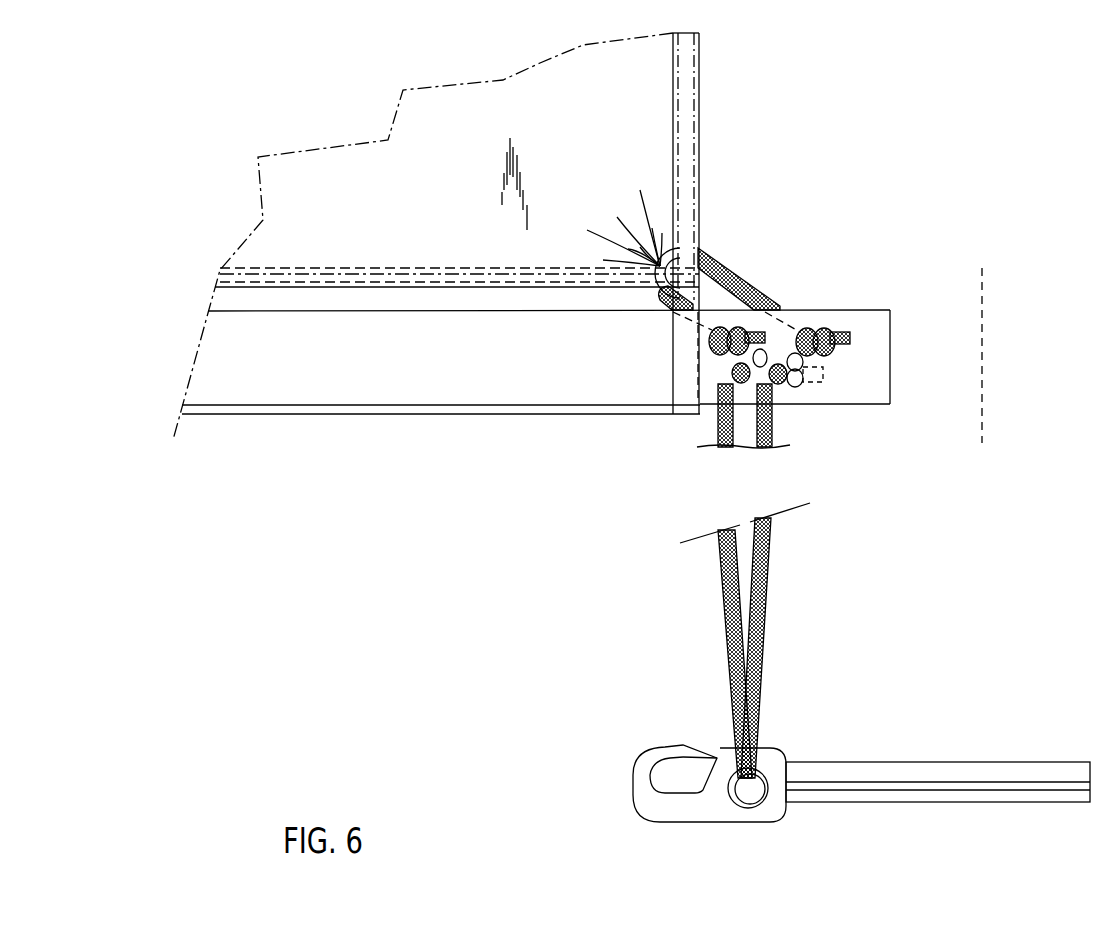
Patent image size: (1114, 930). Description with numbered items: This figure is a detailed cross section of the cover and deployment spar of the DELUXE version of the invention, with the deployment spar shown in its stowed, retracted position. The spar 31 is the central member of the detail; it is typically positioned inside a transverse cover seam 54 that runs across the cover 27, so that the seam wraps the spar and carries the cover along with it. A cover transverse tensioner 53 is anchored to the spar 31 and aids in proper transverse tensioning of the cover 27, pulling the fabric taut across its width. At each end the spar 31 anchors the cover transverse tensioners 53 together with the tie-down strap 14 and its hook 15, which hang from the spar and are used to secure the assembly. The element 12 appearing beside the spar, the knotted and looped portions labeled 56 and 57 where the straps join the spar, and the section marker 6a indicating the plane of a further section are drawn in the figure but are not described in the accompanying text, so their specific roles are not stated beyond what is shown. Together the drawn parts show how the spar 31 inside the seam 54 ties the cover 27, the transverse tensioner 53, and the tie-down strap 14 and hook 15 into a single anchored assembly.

The vertical post 12 is at (786, 223).
The cover 27 is at (423, 236).
The transverse cover seam 54 is at (433, 233).
The spar 31 is at (1113, 257).
The cover transverse tensioner 53 is at (697, 327).
The knot 56 is at (793, 345).
The loop 57 is at (780, 372).
The tie-down strap 14 is at (787, 640).
The hook 15 is at (861, 817).
The section line 6a is at (932, 293).